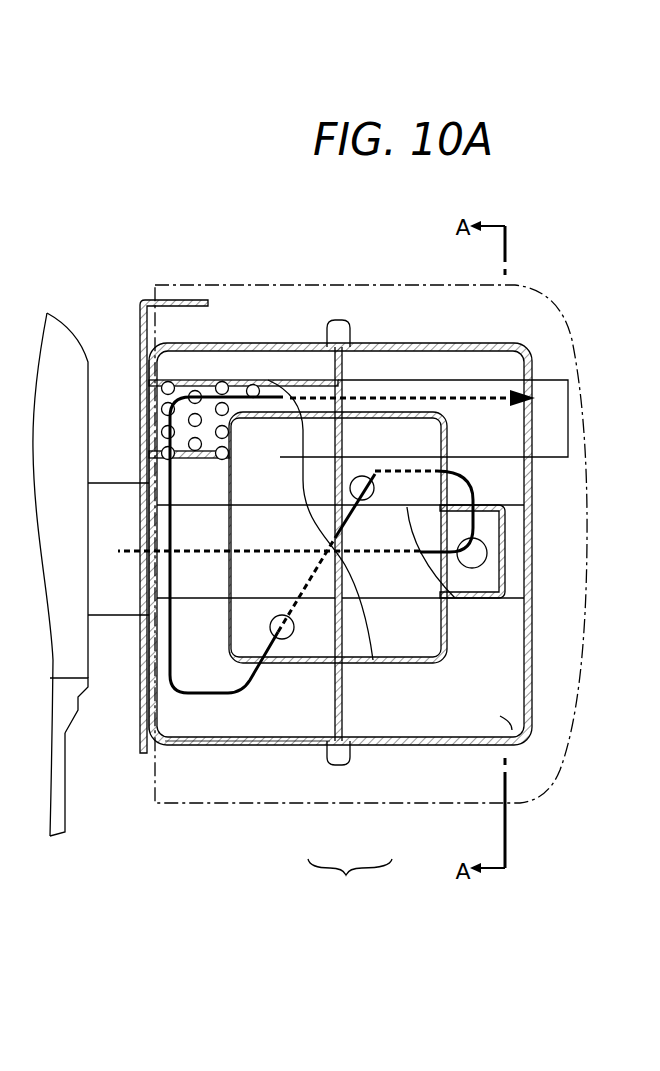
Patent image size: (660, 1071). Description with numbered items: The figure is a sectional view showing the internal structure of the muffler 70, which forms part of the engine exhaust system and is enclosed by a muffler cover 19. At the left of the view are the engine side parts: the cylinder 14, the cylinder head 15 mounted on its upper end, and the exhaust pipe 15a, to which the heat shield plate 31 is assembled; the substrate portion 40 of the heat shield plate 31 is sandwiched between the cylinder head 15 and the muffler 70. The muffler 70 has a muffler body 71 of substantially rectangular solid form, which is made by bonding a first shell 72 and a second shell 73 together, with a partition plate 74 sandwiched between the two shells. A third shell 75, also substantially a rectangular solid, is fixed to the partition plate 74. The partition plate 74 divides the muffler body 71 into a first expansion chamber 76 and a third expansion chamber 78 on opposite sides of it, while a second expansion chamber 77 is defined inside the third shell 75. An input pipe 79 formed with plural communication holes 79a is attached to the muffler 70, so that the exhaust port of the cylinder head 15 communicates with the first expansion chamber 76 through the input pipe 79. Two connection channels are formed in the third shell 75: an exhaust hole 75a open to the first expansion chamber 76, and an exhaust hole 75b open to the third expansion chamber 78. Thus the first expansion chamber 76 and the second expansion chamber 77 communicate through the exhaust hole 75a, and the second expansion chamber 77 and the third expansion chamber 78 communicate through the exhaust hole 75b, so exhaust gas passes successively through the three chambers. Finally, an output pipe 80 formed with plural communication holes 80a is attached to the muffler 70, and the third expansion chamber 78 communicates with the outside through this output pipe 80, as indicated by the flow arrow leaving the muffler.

The cylinder 14 is at (60, 790).
The cylinder head 15 is at (63, 343).
The exhaust pipe 15a is at (113, 605).
The muffler cover 19 is at (432, 285).
The heat shield plate 31 is at (147, 296).
The substrate portion 40 is at (140, 332).
The muffler 70 is at (516, 340).
The muffler body 71 is at (340, 702).
The first shell 72 is at (413, 742).
The second shell 73 is at (303, 742).
The partition plate 74 is at (340, 695).
The third shell 75 is at (447, 617).
The exhaust hole 75a is at (352, 490).
The exhaust hole 75b is at (286, 639).
The first expansion chamber 76 is at (507, 718).
The second expansion chamber 77 is at (413, 635).
The third expansion chamber 78 is at (207, 727).
The input pipe 79 is at (516, 510).
The communication holes 79a is at (477, 532).
The output pipe 80 is at (549, 379).
The communication holes 80a is at (222, 387).